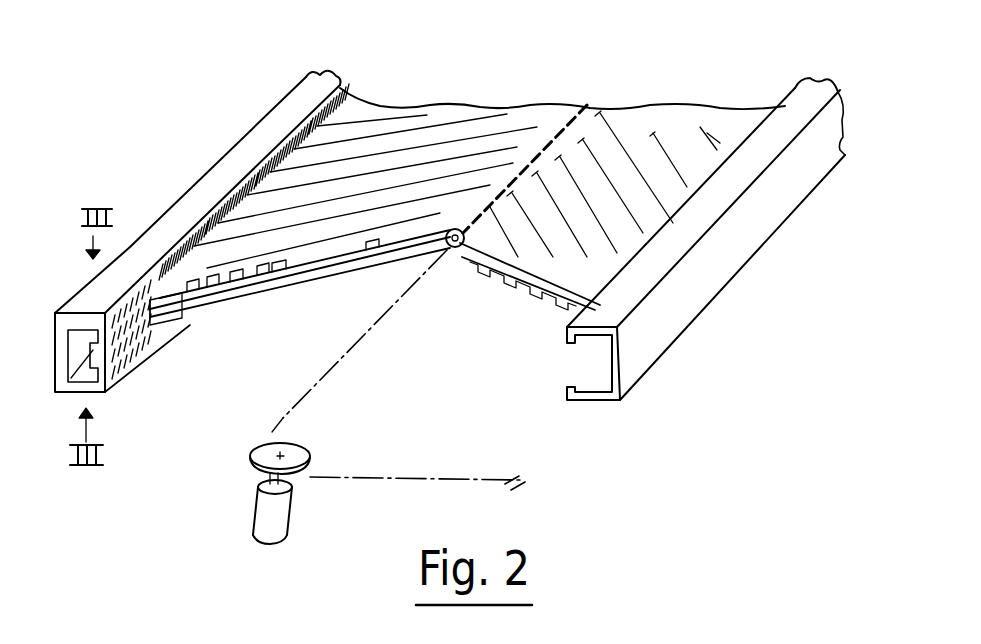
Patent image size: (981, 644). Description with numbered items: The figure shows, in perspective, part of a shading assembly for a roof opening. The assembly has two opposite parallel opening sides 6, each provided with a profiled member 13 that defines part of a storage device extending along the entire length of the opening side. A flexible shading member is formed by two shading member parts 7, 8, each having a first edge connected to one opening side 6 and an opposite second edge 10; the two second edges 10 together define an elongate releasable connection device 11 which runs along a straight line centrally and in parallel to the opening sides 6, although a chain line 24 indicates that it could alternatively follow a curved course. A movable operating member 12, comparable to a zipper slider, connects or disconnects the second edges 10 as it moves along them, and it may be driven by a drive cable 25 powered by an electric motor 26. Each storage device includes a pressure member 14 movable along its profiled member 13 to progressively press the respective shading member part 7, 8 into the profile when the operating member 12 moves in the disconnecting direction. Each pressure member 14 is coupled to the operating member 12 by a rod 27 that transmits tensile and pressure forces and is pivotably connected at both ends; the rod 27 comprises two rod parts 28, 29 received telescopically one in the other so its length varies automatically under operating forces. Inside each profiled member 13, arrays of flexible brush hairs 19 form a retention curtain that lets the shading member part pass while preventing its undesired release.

The opening side 6 is at (450, 201).
The shading member part 7 is at (453, 117).
The shading member part 8 is at (602, 143).
The second edge 10 is at (476, 221).
The elongate releasable connection device 11 is at (523, 156).
The operating member 12 is at (457, 258).
The profiled member 13 is at (187, 200).
The pressure member 14 is at (155, 322).
The brush hairs 19 is at (350, 100).
The chain line 24 is at (607, 127).
The drive cable 25 is at (338, 358).
The electric motor 26 is at (283, 520).
The rod 27 is at (533, 290).
The rod part 28 is at (350, 262).
The rod part 29 is at (279, 255).